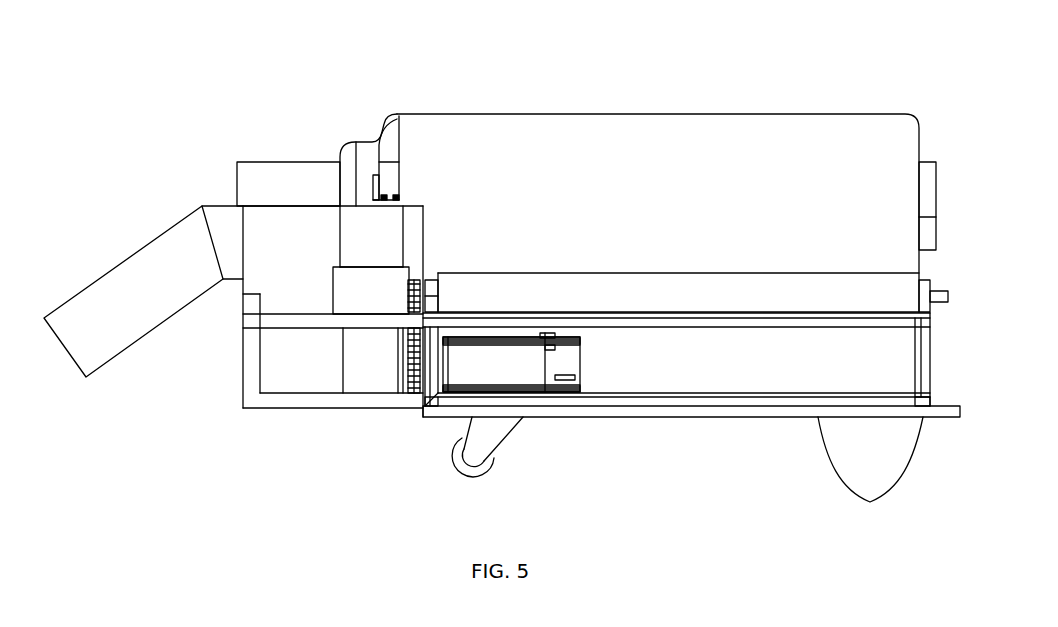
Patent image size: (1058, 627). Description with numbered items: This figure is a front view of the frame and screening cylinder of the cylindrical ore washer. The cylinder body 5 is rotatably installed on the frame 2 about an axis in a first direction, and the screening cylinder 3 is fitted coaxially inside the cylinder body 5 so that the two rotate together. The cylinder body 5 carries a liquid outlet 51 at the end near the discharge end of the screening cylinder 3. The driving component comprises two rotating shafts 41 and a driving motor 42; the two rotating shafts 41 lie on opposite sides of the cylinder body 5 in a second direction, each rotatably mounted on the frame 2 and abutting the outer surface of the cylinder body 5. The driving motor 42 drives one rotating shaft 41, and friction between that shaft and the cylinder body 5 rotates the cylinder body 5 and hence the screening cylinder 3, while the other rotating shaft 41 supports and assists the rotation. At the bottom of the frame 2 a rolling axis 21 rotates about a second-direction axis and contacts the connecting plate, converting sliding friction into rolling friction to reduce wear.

The frame 2 is at (625, 407).
The screening cylinder 3 is at (276, 178).
The cylinder body 5 is at (513, 140).
The rolling axis 21 is at (469, 472).
The rotating shaft 41 is at (770, 297).
The driving motor 42 is at (425, 408).
The liquid outlet 51 is at (368, 345).